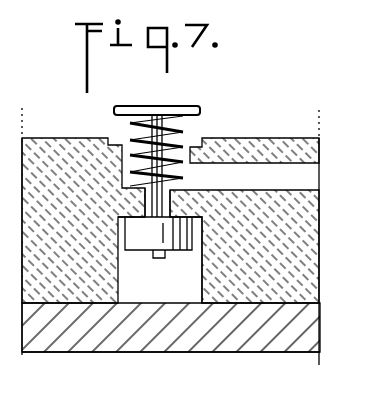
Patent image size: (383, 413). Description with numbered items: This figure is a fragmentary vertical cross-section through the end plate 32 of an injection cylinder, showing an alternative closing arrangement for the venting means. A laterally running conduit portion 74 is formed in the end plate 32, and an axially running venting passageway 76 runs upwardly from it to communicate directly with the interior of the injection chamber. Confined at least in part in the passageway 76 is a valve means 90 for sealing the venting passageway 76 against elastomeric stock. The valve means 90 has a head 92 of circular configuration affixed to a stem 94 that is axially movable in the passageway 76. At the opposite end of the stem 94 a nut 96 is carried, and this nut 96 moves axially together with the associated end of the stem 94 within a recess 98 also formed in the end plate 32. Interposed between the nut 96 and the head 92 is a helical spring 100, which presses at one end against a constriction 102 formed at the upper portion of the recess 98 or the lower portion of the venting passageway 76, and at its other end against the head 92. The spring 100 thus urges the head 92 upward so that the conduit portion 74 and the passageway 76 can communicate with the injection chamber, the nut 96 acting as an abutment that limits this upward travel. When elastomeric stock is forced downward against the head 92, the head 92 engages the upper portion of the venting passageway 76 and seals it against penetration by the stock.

The end plate 32 is at (295, 232).
The laterally running conduit portion 74 is at (277, 163).
The venting passageway 76 is at (122, 165).
The valve means 90 is at (144, 91).
The head 92 is at (113, 108).
The stem 94 is at (200, 114).
The nut 96 is at (137, 239).
The recess 98 is at (200, 252).
The helical spring 100 is at (150, 166).
The constriction 102 is at (187, 208).